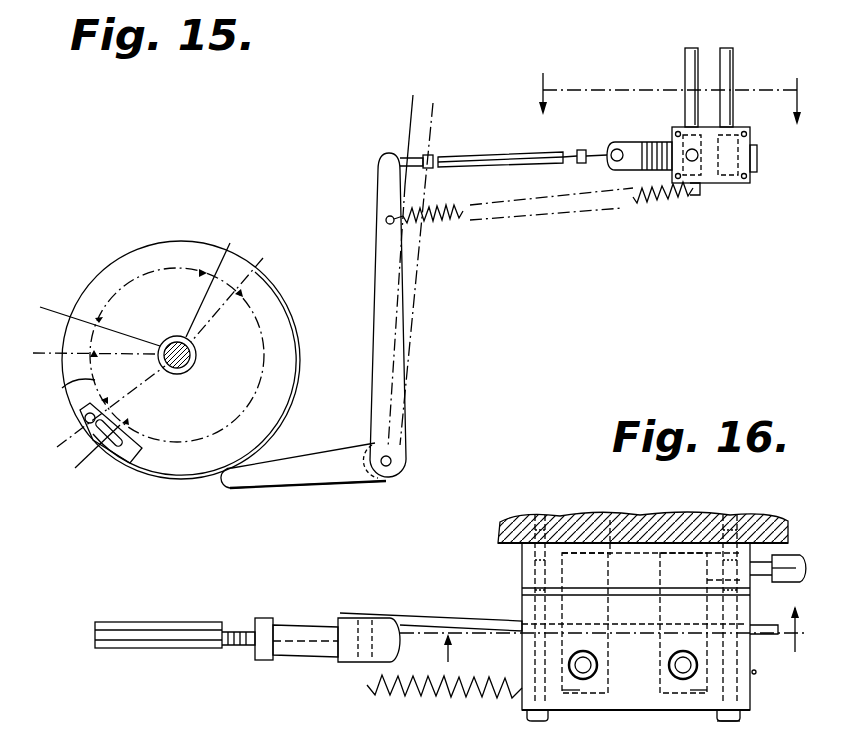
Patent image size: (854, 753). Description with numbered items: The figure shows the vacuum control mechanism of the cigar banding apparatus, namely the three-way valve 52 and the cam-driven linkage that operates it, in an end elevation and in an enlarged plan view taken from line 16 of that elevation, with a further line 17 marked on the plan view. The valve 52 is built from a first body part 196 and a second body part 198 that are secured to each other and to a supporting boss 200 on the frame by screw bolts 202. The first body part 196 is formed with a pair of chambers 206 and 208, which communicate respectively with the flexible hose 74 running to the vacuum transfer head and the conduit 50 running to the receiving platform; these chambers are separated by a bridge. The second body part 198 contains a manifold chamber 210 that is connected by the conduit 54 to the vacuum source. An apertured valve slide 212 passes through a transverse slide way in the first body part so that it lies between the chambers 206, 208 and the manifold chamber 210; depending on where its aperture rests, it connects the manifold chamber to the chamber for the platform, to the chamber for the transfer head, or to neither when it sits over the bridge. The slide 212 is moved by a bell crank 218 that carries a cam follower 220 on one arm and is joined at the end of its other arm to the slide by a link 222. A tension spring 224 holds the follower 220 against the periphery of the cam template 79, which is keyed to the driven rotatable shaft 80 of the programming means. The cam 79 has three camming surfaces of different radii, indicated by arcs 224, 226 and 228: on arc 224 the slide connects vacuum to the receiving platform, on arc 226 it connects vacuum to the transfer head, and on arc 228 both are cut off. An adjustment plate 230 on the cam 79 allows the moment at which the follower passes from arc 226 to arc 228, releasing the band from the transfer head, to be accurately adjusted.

In FIG. 15, the section line 16— 16 is at (652, 100).
In FIG. 16, the section line 17— 17 is at (603, 629).
In FIG. 15, the conduit 50 is at (733, 72).
In FIG. 16, the conduit 50 is at (685, 650).
In FIG. 15, the three-way valve 52 is at (712, 185).
In FIG. 16, the three-way valve 52 is at (756, 672).
In FIG. 16, the conduit 54 is at (800, 555).
In FIG. 15, the flexible conduit or hose 74 is at (685, 66).
In FIG. 16, the flexible conduit or hose 74 is at (584, 650).
In FIG. 15, the cam template 79 is at (268, 285).
In FIG. 15, the rotatable shaft 80 is at (196, 350).
In FIG. 16, the first body part 196 is at (522, 598).
In FIG. 16, the second body part 198 is at (522, 566).
In FIG. 16, the supporting boss 200 is at (560, 525).
In FIG. 16, the screw bolts 202 is at (740, 725).
In FIG. 16, the chamber 206 is at (578, 693).
In FIG. 16, the chamber 208 is at (684, 693).
In FIG. 16, the manifold chamber 210 is at (612, 545).
In FIG. 15, the valve slide 212 is at (636, 142).
In FIG. 16, the valve slide 212 is at (418, 613).
In FIG. 15, the bell crank 218 is at (404, 400).
In FIG. 16, the bell crank 218 is at (640, 680).
In FIG. 15, the cam follower 220 is at (238, 487).
In FIG. 15, the link 222 is at (540, 144).
In FIG. 16, the link 222 is at (150, 652).
In FIG. 15, the tension spring 224 is at (166, 255).
In FIG. 15, the arc 226 is at (262, 385).
In FIG. 15, the arc 228 is at (64, 388).
In FIG. 15, the adjustment plate 230 is at (120, 470).